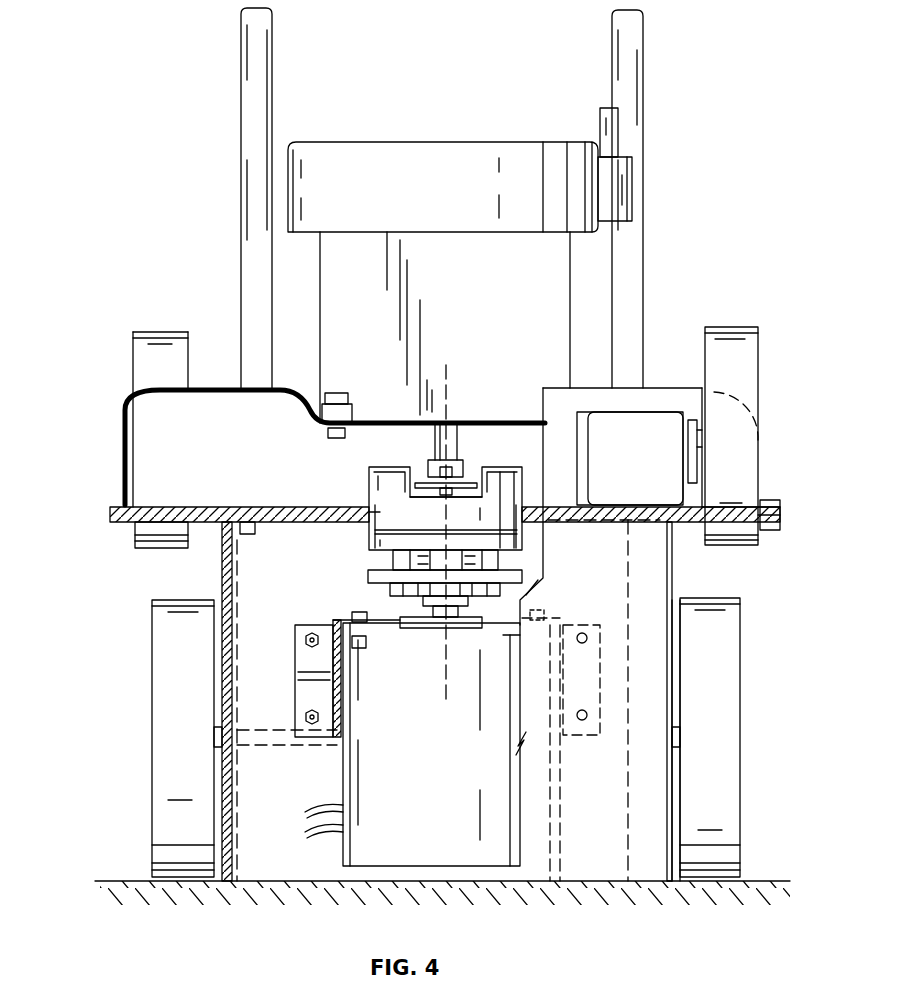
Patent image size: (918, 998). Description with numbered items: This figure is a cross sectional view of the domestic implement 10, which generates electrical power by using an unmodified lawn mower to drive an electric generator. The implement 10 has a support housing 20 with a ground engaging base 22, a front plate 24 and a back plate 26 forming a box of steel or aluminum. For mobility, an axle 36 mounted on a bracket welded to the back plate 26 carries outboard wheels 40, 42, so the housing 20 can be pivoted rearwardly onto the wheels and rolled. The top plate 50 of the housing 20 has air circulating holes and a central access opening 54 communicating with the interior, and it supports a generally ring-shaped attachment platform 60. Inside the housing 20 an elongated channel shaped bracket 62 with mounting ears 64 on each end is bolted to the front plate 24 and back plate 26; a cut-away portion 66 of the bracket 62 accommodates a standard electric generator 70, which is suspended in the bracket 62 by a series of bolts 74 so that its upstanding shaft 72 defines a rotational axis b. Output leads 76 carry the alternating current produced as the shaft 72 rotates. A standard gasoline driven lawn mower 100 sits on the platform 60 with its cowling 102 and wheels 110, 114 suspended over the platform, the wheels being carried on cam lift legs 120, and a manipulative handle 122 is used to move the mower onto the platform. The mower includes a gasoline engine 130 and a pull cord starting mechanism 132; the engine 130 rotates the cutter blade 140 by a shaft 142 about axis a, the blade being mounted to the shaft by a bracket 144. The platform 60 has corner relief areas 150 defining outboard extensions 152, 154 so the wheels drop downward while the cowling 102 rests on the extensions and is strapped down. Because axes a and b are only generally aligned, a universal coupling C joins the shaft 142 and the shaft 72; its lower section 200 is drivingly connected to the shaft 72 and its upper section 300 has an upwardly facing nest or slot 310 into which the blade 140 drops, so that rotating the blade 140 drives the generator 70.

The domestic implement 10 is at (676, 580).
The support housing 20 is at (670, 642).
The ground engaging base 22 is at (650, 875).
The front plate 24 is at (579, 862).
The back plate 26 is at (272, 855).
The axle 36 is at (682, 737).
The outboard wheel 40 is at (730, 682).
The outboard wheel 42 is at (160, 712).
The top plate 50 is at (302, 526).
The central access opening 54 is at (358, 522).
The attachment platform 60 is at (778, 508).
The channel shaped bracket 62 is at (341, 618).
The mounting ears 64 is at (315, 694).
The cut-away portion 66 is at (336, 630).
The electric generator 70 is at (345, 766).
The upstanding shaft 72 is at (450, 610).
The bolts 74 is at (350, 650).
The output leads 76 is at (334, 812).
The lawn mower 100 is at (660, 182).
The cowling 102 is at (215, 392).
The wheel 110 is at (750, 345).
The wheel 114 is at (143, 343).
The cam lift legs 120 is at (690, 425).
The manipulative handle 122 is at (262, 54).
The gasoline engine 130 is at (572, 272).
The pull cord starting mechanism 132 is at (613, 118).
The cutter blade 140 is at (468, 481).
The shaft 142 is at (452, 432).
The bracket 144 is at (428, 463).
The corner relief areas 150 is at (707, 507).
The outboard extension 152 is at (118, 510).
The outboard extension 154 is at (780, 517).
The lower section 200 is at (527, 557).
The upper section 300 is at (540, 490).
The nest or slot 310 is at (435, 512).
The axis a is at (446, 370).
The axis b is at (446, 690).
The universal coupling C is at (355, 490).